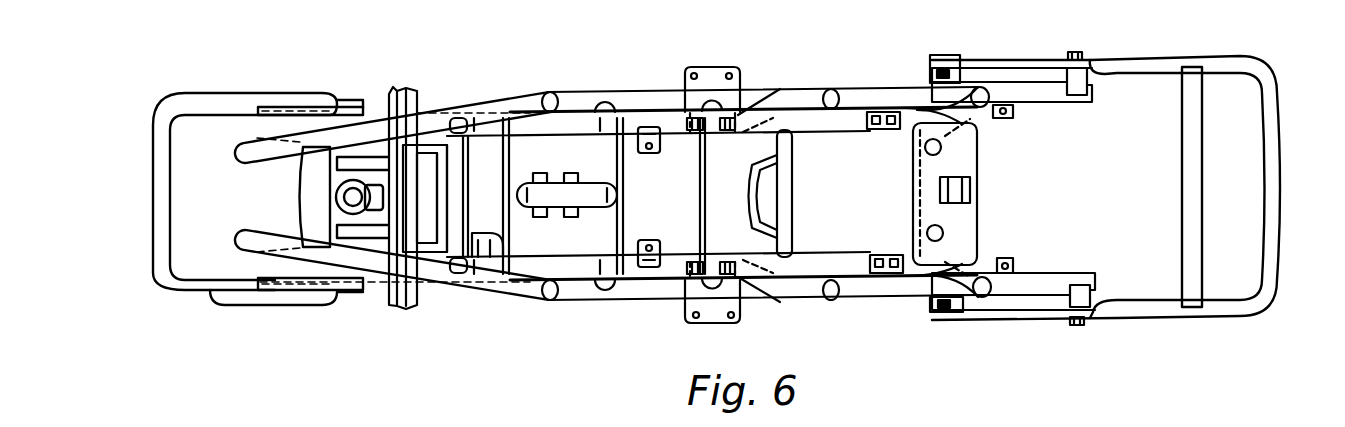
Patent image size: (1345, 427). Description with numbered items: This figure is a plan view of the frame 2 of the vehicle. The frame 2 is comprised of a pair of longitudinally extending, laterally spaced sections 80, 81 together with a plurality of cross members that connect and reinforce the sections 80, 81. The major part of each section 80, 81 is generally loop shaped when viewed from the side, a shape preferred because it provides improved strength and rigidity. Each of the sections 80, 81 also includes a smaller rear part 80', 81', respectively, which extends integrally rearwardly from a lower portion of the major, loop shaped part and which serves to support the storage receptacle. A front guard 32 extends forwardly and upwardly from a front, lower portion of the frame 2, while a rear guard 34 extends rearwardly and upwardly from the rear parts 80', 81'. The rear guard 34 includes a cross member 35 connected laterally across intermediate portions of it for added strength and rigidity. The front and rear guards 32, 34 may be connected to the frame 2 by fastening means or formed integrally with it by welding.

The frame 2 is at (521, 337).
The front guard 32 is at (153, 201).
The rear guard 34 is at (1143, 62).
The cross member 35 is at (1203, 182).
The section 80 is at (712, 310).
The section 81 is at (712, 82).
The rear part 80' is at (1013, 255).
The rear part 81' is at (1033, 115).